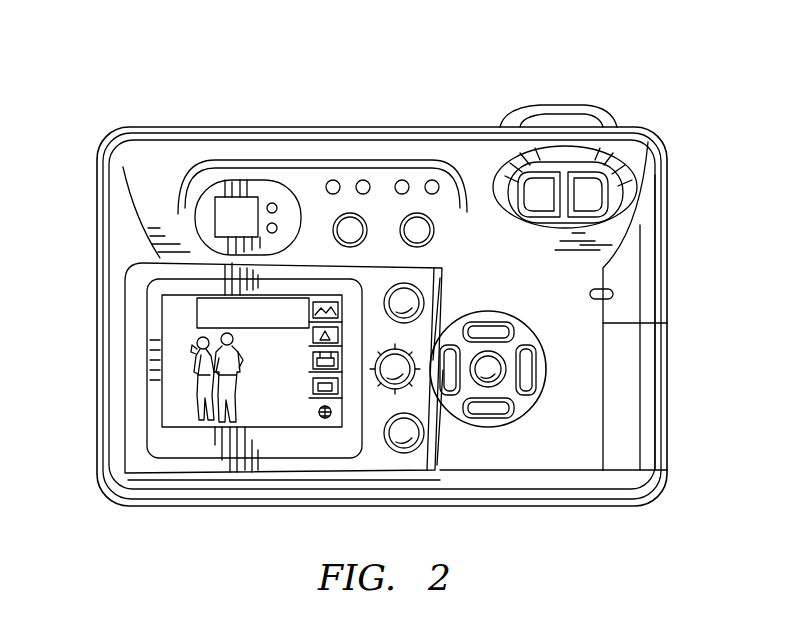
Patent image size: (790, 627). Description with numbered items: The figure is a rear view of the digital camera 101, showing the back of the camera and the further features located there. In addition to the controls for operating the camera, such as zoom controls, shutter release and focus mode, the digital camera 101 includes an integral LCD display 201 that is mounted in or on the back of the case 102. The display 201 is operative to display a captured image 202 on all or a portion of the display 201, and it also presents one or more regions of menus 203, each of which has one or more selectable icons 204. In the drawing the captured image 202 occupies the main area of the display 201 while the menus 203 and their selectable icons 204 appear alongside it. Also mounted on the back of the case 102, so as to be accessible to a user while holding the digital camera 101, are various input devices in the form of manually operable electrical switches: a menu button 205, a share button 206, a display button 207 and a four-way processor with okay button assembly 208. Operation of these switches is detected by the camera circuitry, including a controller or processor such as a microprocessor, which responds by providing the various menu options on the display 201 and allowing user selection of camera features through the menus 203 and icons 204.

The digital camera 101 is at (183, 105).
The case 102 is at (652, 147).
The LCD display 201 is at (170, 413).
The captured image 202 is at (213, 380).
The menus 203 is at (310, 410).
The selectable icons 204 is at (312, 360).
The menu button 205 is at (424, 433).
The share button 206 is at (389, 392).
The display button 207 is at (424, 300).
The four-way processor with okay button assembly 208 is at (532, 321).